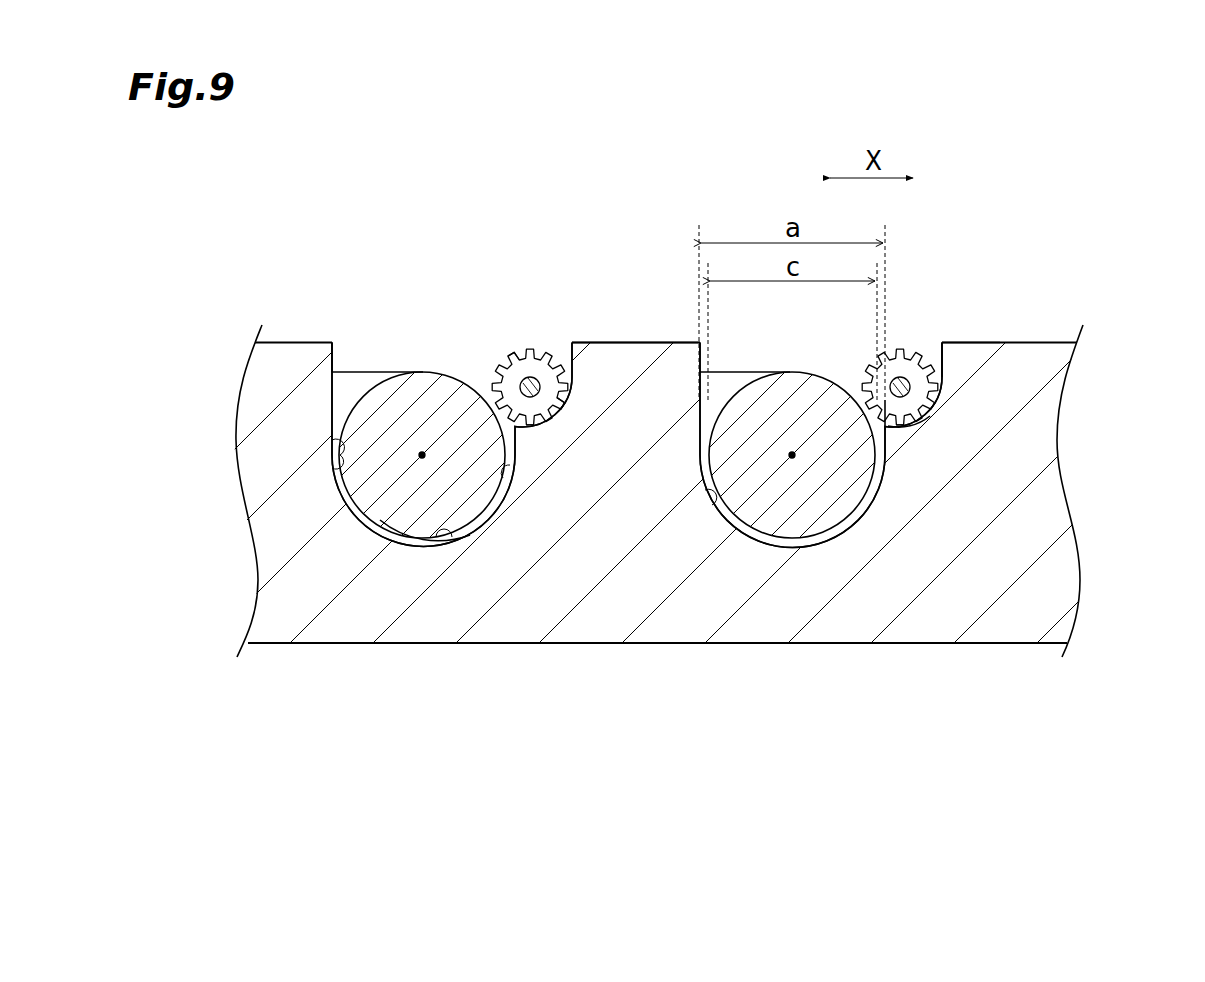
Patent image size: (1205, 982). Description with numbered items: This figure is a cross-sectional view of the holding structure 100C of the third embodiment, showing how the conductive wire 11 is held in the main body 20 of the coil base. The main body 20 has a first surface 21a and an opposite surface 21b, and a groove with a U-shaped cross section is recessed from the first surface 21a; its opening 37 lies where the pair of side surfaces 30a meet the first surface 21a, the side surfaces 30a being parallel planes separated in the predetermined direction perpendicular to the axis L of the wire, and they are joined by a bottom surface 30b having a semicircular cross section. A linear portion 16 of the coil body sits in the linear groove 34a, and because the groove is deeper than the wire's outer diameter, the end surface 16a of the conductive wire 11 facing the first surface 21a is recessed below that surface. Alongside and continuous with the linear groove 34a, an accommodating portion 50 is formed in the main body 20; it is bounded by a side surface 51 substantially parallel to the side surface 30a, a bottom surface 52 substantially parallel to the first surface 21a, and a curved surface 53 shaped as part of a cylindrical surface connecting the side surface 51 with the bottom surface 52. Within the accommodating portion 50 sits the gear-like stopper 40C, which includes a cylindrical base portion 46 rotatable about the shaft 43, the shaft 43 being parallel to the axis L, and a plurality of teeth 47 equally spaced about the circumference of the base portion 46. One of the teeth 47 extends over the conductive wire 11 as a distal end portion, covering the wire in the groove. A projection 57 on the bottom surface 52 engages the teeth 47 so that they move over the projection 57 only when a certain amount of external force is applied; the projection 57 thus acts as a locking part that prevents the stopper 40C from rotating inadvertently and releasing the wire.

The main body 20 is at (1081, 521).
The first surface 21a is at (280, 342).
The second surface of base member 21b is at (320, 644).
The linear groove 34a is at (338, 411).
The side surface 30a is at (345, 470).
The bottom surface 30b is at (446, 535).
The opening 37 is at (335, 352).
The conductive wire 11 is at (377, 370).
The linear portion 16 is at (415, 513).
The end surface 16a is at (422, 372).
The axis L is at (421, 458).
The stopper 40C is at (548, 338).
The base portion 46 is at (528, 377).
The shaft 43 is at (546, 430).
The teeth 47 is at (493, 360).
The projection 57 is at (534, 428).
The accommodating portion 50 is at (569, 338).
The side surface 51 is at (940, 371).
The bottom surface 52 is at (895, 421).
The curved surface 53 is at (928, 422).
The holding structure 100C is at (483, 260).